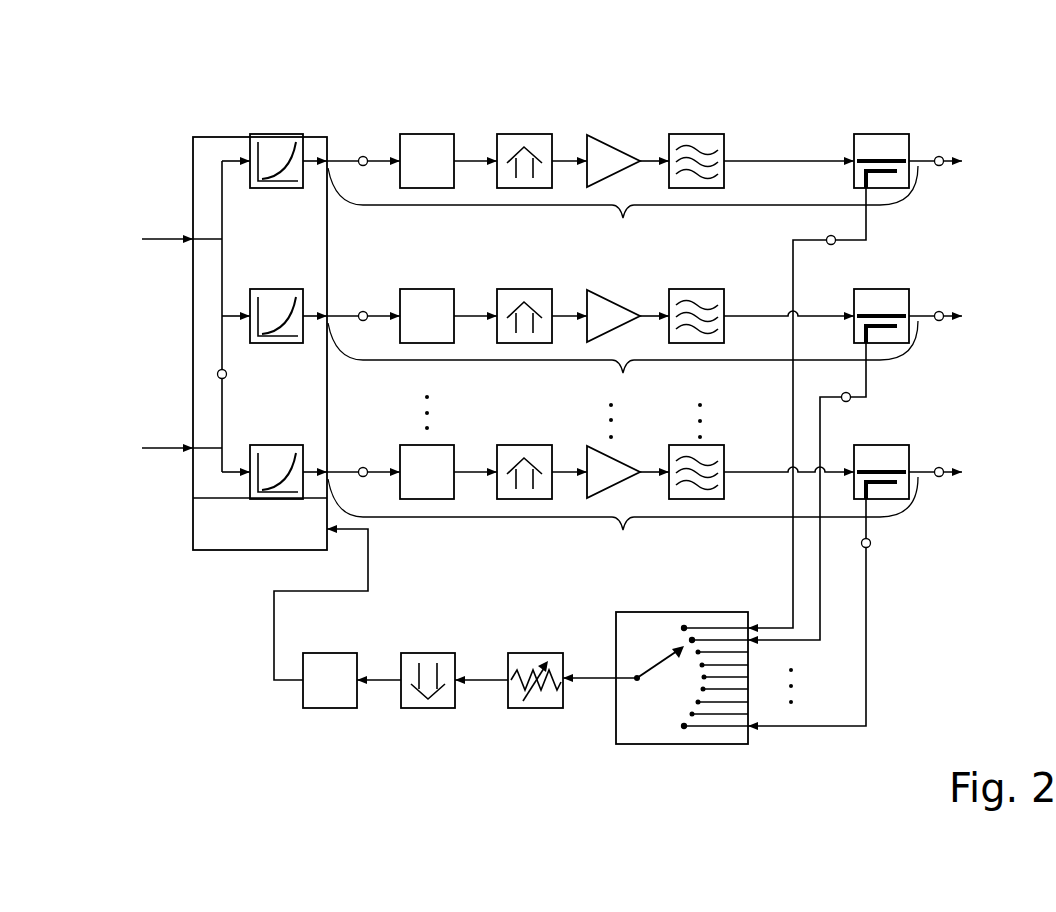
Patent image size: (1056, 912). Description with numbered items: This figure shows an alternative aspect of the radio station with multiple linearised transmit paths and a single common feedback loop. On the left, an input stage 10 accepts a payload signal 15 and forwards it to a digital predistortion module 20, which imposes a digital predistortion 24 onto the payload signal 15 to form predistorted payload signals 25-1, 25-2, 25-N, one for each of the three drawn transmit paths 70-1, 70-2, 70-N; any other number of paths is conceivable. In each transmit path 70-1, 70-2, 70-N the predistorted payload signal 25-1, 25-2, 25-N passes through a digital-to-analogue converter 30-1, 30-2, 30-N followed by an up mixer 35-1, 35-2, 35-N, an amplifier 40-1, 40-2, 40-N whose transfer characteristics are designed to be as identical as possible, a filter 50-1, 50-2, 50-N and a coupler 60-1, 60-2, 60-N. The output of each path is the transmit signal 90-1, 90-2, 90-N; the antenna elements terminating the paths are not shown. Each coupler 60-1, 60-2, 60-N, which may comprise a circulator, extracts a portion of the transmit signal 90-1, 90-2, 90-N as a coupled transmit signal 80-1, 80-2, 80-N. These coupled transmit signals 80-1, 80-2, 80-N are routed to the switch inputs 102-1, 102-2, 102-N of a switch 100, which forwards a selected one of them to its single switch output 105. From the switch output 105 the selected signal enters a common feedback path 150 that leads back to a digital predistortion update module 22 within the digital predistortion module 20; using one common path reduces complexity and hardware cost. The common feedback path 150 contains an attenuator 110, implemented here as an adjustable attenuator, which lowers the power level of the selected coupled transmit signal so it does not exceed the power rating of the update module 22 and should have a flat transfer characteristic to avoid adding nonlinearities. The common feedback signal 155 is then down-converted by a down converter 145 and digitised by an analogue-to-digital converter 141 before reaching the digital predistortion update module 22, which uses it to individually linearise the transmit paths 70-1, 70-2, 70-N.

The input stage 10 is at (168, 242).
The payload signal 15 is at (216, 372).
The digital predistortion module 20 is at (313, 137).
The digital predistortion update module 22 is at (262, 552).
The digital predistortion 24 is at (290, 290).
The predistorted payload signal 25-1 is at (365, 155).
The predistorted payload signal 25-2 is at (365, 310).
The predistorted payload signal 25-N is at (365, 466).
The digital-to-analogue converter 30-1 is at (427, 134).
The digital-to-analogue converter 30-2 is at (427, 289).
The digital-to-analogue converter 30-N is at (427, 445).
The up mixer 35-1 is at (542, 161).
The up mixer 35-2 is at (542, 316).
The up mixer 35-N is at (542, 472).
The amplifier 40-1 is at (617, 147).
The amplifier 40-2 is at (617, 302).
The amplifier 40-N is at (617, 458).
The filter 50-1 is at (697, 134).
The filter 50-2 is at (697, 289).
The filter 50-N is at (697, 445).
The coupler 60-1 is at (880, 134).
The coupler 60-2 is at (880, 289).
The coupler 60-N is at (880, 445).
The transmit path 70-1 is at (623, 200).
The transmit path 70-2 is at (623, 355).
The transmit path 70-N is at (623, 513).
The coupled transmit signal 80-1 is at (842, 226).
The coupled transmit signal 80-2 is at (847, 393).
The coupled transmit signal 80-N is at (871, 546).
The transmit signal 90-1 is at (940, 156).
The transmit signal 90-2 is at (940, 311).
The transmit signal 90-N is at (940, 467).
The switch 100 is at (630, 745).
The switch input 102-1 is at (733, 626).
The switch input 102-2 is at (730, 638).
The switch input 102-N is at (733, 727).
The switch output 105 is at (625, 675).
The attenuator 110 is at (537, 708).
The analogue-to-digital converter 141 is at (330, 708).
The down converter 145 is at (427, 708).
The common feedback path 150 is at (487, 683).
The common feedback signal 155 is at (270, 637).